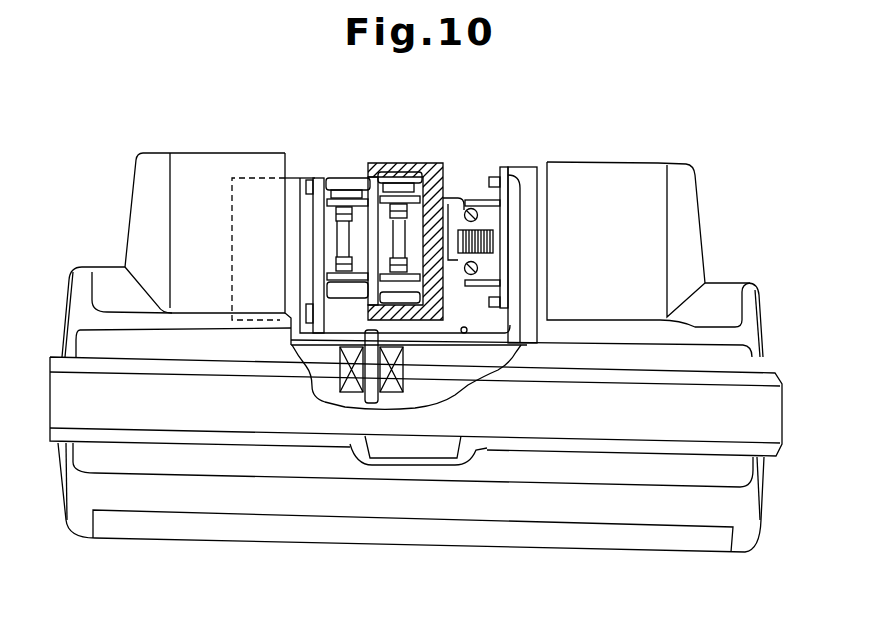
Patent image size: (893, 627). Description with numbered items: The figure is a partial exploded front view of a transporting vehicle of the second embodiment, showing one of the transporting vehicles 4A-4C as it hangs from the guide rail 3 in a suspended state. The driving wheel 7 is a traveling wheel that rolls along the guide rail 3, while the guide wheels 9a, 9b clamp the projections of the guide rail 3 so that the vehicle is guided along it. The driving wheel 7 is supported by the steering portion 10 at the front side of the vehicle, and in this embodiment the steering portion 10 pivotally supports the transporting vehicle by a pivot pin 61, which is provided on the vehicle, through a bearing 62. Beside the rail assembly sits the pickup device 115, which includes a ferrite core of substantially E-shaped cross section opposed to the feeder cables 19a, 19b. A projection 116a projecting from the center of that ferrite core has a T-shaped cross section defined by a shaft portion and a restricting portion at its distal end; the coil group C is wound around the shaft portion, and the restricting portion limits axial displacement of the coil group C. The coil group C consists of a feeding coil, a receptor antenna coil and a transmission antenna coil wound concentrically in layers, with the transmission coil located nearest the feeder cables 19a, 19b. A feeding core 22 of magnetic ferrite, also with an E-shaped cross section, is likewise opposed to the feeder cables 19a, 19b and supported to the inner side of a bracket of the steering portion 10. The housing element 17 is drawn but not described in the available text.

The housing 17 is at (298, 178).
The guide wheel 9a is at (348, 178).
The guide wheel 9b is at (325, 297).
The driving wheel 7 is at (367, 197).
The guide rail 3 is at (413, 163).
The projection 116a is at (450, 207).
The pickup device 115 is at (505, 200).
The feeder cable 19a is at (478, 215).
The feeder cable 19b is at (478, 268).
The feeding core 22 is at (500, 285).
The coil group C is at (455, 319).
The bearing 62 is at (404, 371).
The pivot pin 61 is at (372, 401).
The steering portion 10 is at (480, 372).
The transporting vehicles 4A-4C is at (271, 557).